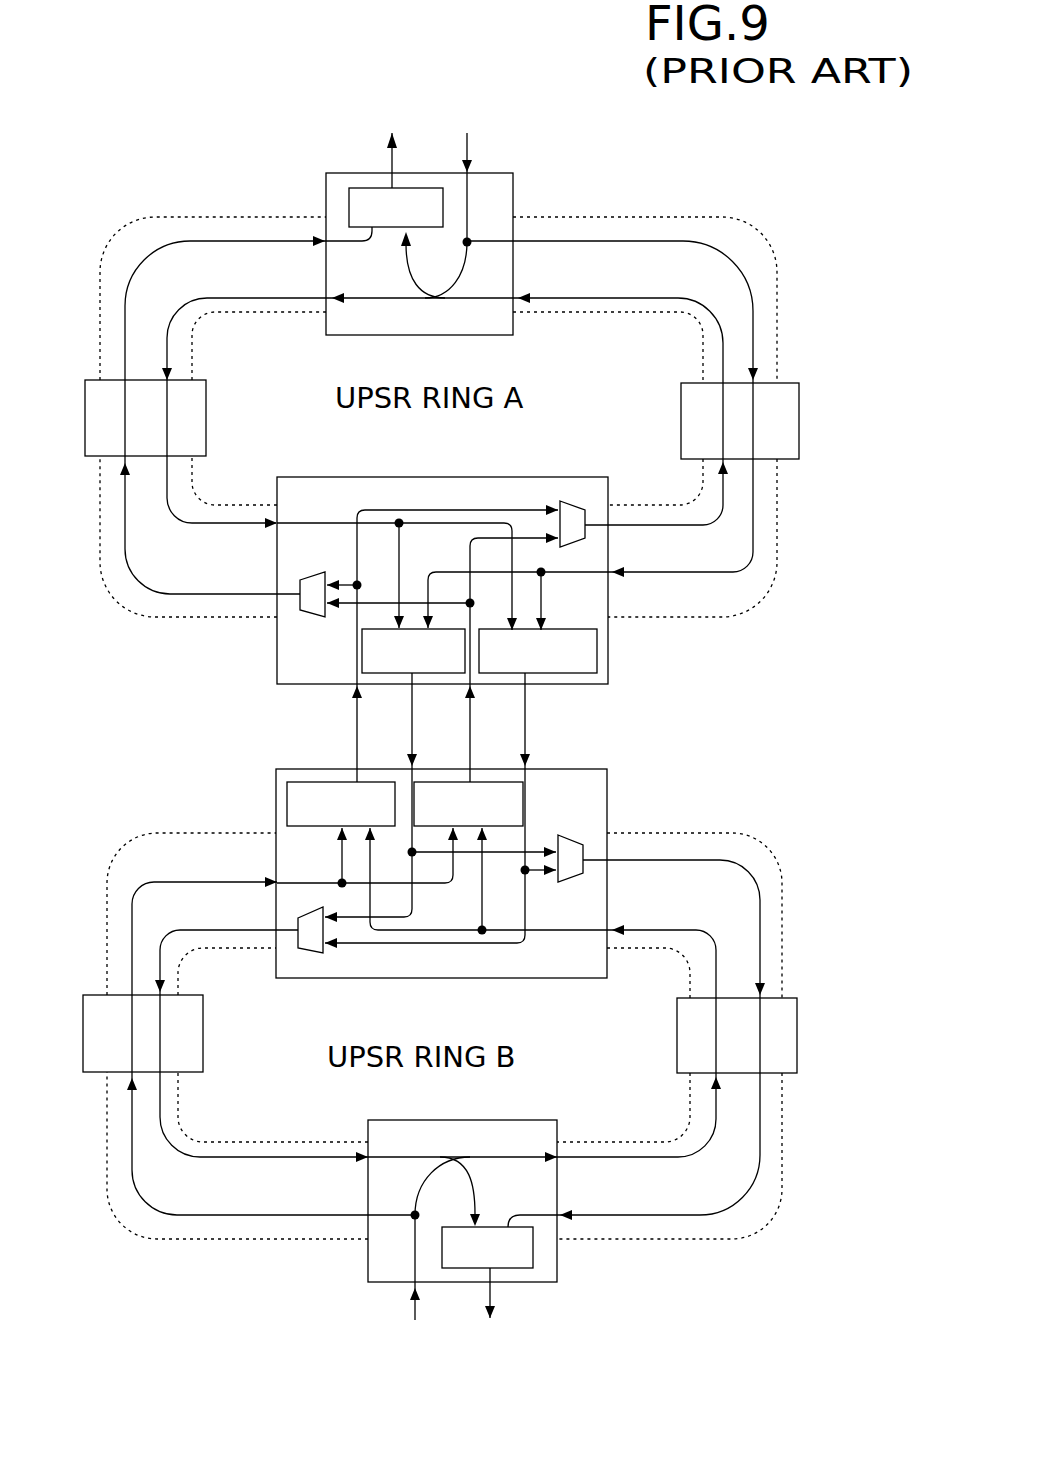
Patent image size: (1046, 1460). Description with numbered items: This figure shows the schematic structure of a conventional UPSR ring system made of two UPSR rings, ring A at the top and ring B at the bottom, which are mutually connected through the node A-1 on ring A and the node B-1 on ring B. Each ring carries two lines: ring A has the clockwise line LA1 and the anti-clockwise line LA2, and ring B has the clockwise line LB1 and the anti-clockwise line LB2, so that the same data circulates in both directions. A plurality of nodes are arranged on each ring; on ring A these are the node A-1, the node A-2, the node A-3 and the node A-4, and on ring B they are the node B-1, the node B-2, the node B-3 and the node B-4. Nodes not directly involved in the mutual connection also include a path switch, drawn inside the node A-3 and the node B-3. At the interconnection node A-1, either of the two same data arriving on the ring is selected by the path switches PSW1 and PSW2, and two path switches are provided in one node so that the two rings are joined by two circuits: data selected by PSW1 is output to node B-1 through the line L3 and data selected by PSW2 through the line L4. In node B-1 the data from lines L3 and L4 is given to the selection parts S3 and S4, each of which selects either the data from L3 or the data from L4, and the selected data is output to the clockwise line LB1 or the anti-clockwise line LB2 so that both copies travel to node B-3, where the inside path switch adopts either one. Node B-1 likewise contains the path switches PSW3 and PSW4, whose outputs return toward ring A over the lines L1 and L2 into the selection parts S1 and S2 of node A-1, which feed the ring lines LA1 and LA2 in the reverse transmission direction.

The clockwise line of UPSR ring A LA1 is at (648, 241).
The anti-clockwise line of UPSR ring A LA2 is at (657, 300).
The node A-1 is at (413, 477).
The node A-2 is at (681, 402).
The node A-3 is at (440, 335).
The node A-4 is at (206, 407).
The selection part S1 is at (313, 613).
The selection part S2 is at (585, 535).
The path switch PSW1 is at (413, 651).
The path switch PSW2 is at (538, 651).
The line L1 is at (357, 733).
The line L2 is at (477, 730).
The line L3 is at (423, 718).
The line L4 is at (525, 725).
The node B-1 is at (468, 978).
The node B-2 is at (203, 1050).
The node B-3 is at (447, 1120).
The node B-4 is at (677, 1044).
The path switch PSW3 is at (341, 804).
The path switch PSW4 is at (468, 804).
The selection part S3 is at (303, 947).
The selection part S4 is at (582, 843).
The clockwise line of UPSR ring B LB1 is at (235, 1215).
The anti-clockwise line of UPSR ring B LB2 is at (227, 1157).